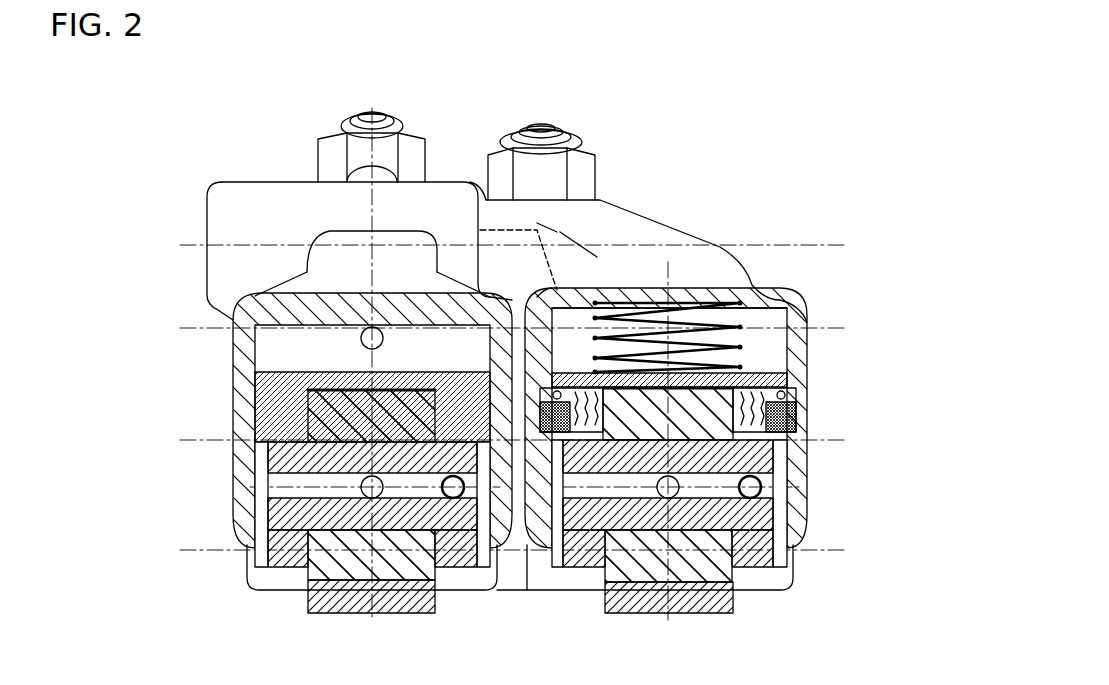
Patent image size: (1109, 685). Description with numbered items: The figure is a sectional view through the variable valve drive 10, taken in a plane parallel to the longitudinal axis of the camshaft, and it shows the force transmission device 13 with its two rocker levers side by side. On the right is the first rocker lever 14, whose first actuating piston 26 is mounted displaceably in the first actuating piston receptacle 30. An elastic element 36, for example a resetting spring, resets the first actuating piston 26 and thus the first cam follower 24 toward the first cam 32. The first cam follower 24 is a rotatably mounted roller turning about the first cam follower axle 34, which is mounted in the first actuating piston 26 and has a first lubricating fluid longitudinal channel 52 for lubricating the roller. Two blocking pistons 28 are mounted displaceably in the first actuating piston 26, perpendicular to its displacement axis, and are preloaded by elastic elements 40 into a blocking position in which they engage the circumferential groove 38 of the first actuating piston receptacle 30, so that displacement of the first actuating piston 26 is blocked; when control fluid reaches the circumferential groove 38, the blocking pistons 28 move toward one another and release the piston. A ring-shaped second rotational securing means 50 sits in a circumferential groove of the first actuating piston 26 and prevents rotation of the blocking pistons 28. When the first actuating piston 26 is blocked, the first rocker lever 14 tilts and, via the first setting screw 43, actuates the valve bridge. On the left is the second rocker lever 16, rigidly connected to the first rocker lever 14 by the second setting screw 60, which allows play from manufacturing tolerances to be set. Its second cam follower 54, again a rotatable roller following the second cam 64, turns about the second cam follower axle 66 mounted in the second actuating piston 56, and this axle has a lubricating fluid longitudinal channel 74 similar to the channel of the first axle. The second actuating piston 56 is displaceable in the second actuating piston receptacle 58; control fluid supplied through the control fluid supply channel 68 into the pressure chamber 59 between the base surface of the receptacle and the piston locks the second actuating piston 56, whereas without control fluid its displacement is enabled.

The variable valve drive 10 is at (788, 166).
The force transmission device 13 is at (658, 156).
The first rocker lever 14 is at (717, 257).
The second rocker lever 16 is at (318, 270).
The first cam follower 24 is at (712, 568).
The first actuating piston 26 is at (807, 372).
The blocking piston 28 is at (797, 402).
The first actuating piston receptacle 30 is at (807, 318).
The first cam 32 is at (725, 605).
The first cam follower axle 34 is at (803, 523).
The elastic element 36 is at (787, 287).
The circumferential groove 38 is at (812, 428).
The elastic element 40 is at (800, 488).
The first setting screw 43 is at (513, 130).
The second rotational securing means 50 is at (790, 405).
The first lubricating fluid longitudinal channel 52 is at (797, 583).
The second cam follower 54 is at (302, 568).
The second actuating piston 56 is at (258, 458).
The second actuating piston receptacle 58 is at (240, 342).
The pressure chamber 59 is at (245, 384).
The second setting screw 60 is at (332, 160).
The second cam 64 is at (338, 613).
The second cam follower axle 66 is at (310, 478).
The control fluid supply channel 68 is at (358, 340).
The lubricating fluid longitudinal channel 74 is at (247, 558).